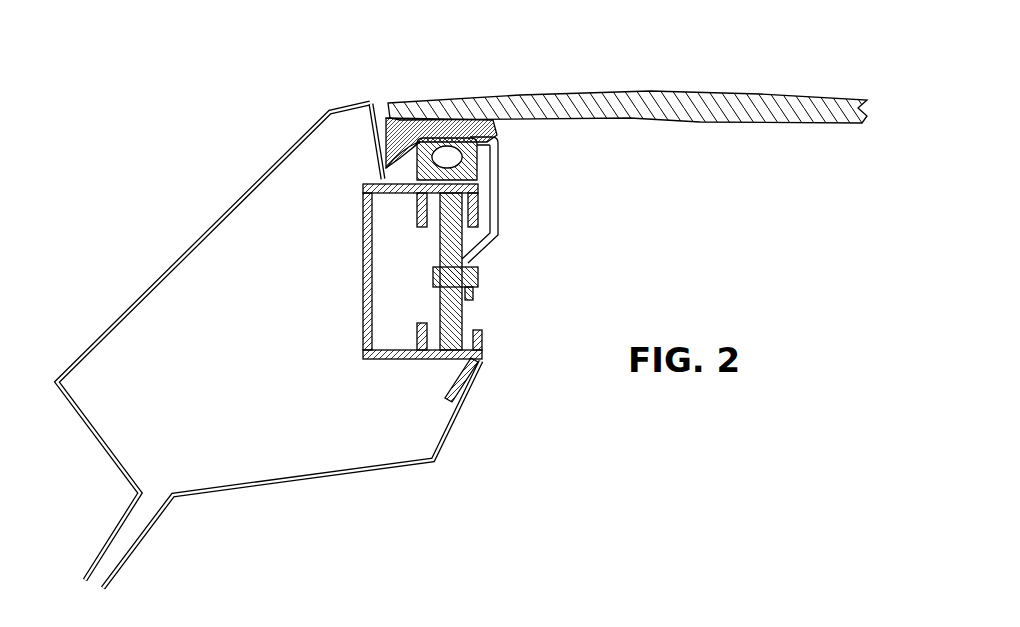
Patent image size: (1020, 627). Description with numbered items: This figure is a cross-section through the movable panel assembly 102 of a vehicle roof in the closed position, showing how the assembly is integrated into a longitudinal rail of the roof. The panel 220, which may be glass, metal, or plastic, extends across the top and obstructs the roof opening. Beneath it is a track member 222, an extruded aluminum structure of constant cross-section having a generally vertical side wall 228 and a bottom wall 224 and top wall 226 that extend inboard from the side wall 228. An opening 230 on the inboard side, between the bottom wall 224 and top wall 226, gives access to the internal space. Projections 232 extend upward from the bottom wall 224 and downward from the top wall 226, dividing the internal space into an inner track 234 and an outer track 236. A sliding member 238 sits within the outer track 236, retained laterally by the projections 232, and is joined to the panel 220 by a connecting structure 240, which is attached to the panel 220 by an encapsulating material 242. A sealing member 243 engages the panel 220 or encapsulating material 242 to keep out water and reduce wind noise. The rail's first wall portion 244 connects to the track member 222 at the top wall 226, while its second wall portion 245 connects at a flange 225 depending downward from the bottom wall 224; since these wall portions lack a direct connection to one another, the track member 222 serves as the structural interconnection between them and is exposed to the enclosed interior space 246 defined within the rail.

The movable panel assembly 102 is at (713, 63).
The panel 220 is at (792, 96).
The track member 222 is at (414, 303).
The bottom wall 224 is at (372, 359).
The flange 225 is at (479, 376).
The top wall 226 is at (376, 198).
The side wall 228 is at (368, 288).
The opening 230 is at (500, 287).
The projections 232 is at (478, 210).
The inner track 234 is at (397, 333).
The outer track 236 is at (431, 335).
The sliding members 238 is at (463, 240).
The connecting structures 240 is at (500, 150).
The encapsulating material 242 is at (393, 98).
The sealing member 243 is at (388, 166).
The first wall portion 244 is at (285, 158).
The second wall portion 245 is at (460, 420).
The enclosed interior space 246 is at (206, 362).